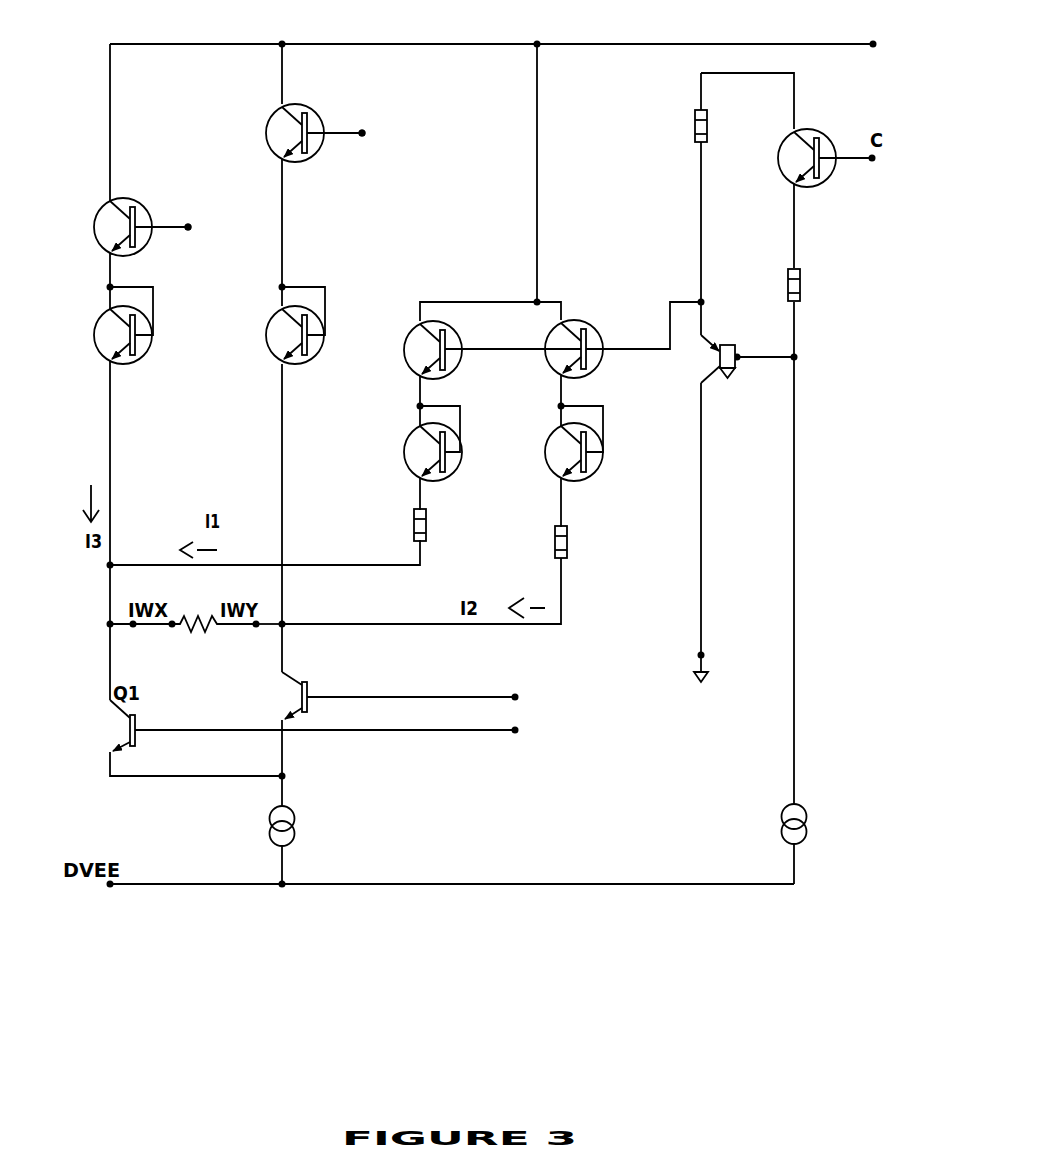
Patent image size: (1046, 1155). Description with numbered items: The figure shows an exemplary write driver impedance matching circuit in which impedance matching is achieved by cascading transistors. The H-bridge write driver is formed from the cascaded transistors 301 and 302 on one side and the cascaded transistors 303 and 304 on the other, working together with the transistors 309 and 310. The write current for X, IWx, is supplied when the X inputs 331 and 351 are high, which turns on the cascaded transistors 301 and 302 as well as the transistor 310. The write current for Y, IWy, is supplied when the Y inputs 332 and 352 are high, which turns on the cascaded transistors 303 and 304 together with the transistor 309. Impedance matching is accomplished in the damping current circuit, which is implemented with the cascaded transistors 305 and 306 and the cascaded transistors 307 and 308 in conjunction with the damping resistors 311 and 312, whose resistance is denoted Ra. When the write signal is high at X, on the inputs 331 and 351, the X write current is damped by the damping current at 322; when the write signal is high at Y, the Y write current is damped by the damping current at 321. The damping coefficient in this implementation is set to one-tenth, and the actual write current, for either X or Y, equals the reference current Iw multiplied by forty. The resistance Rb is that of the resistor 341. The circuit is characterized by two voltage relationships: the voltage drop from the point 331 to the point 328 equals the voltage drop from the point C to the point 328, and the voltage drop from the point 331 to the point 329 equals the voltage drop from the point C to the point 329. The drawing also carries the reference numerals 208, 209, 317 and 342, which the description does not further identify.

The DVCC supply rail 208 is at (491, 41).
The current source IW + IW/10 209 is at (452, 845).
The transistor 301 is at (129, 218).
The transistor 302 is at (107, 328).
The transistor 303 is at (299, 132).
The transistor 304 is at (278, 328).
The transistor 305 is at (416, 345).
The transistor 306 is at (418, 445).
The transistor 307 is at (574, 337).
The transistor 308 is at (593, 453).
The transistor 309 is at (175, 738).
The transistor 310 is at (376, 728).
The damping resistor 311 is at (399, 513).
The damping resistor 312 is at (582, 522).
The resistor Ro 317 is at (214, 630).
The damping current I1 321 is at (219, 550).
The damping current I2 322 is at (498, 596).
The point 328 is at (293, 612).
The point 329 is at (120, 625).
The X input 331 is at (185, 216).
The Y input 332 is at (360, 124).
The resistor 341 is at (816, 286).
The current source IW/40 342 is at (825, 819).
The X input 351 is at (503, 688).
The Y input 352 is at (409, 724).